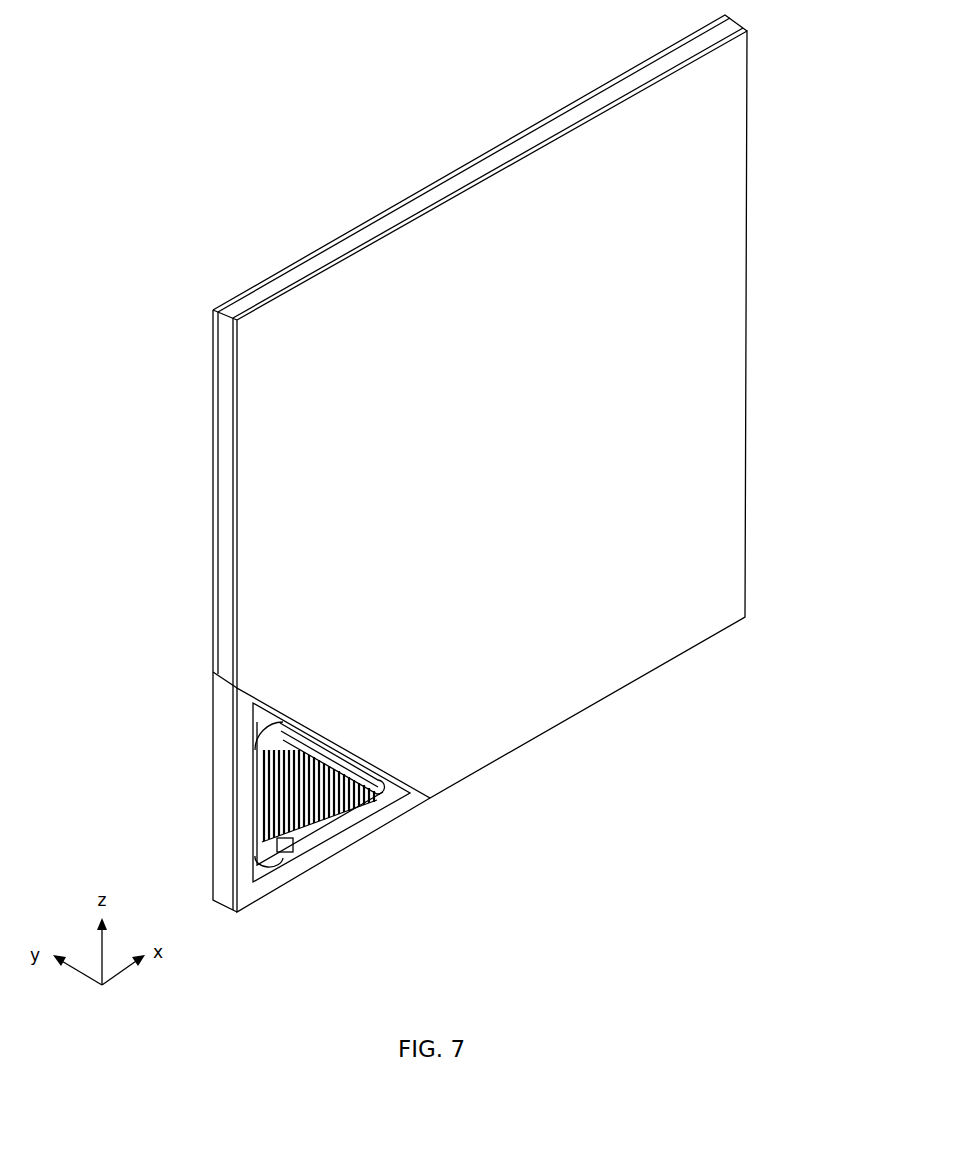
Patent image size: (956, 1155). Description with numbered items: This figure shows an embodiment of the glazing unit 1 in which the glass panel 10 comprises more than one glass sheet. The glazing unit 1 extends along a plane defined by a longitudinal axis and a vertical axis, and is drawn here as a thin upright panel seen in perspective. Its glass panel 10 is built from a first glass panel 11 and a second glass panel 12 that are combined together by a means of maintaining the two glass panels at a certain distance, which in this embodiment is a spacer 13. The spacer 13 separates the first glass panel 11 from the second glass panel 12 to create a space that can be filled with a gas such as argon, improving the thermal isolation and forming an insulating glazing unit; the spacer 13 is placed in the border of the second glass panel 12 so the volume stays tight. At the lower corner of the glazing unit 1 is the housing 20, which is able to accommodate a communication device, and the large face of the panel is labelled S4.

The glazing unit 1 is at (780, 91).
The glass panel 10 is at (286, 239).
The first glass panel 11 is at (213, 352).
The second glass panel 12 is at (265, 302).
The spacer 13 is at (332, 258).
The housing 20 is at (178, 754).
The front surface S4 is at (713, 415).